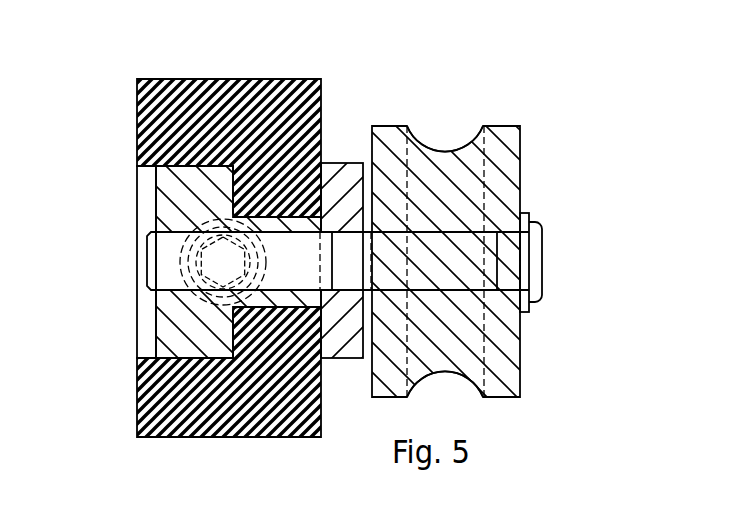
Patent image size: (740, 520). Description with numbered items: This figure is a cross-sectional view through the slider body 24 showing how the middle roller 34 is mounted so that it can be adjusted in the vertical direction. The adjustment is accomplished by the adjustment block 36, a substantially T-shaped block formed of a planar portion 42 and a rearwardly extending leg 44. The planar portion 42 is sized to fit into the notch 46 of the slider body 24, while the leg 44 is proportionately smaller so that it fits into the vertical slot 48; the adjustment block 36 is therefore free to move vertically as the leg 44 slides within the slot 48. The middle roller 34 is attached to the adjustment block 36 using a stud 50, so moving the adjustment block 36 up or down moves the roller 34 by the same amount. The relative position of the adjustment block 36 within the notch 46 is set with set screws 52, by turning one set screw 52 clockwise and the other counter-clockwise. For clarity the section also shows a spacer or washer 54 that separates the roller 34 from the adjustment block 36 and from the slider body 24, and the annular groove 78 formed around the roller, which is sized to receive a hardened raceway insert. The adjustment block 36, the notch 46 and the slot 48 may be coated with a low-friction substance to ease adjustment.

The slider body 24 is at (208, 85).
The vertical slot 48 is at (272, 216).
The leg 44 is at (268, 338).
The notch 46 is at (138, 172).
The adjustment block 36 is at (156, 207).
The planar portion 42 is at (178, 328).
The set screw 52 is at (215, 260).
The spacer or washer 54 is at (345, 163).
The middle roller 34 is at (507, 126).
The annular groove 78 is at (450, 152).
The stud 50 is at (542, 280).